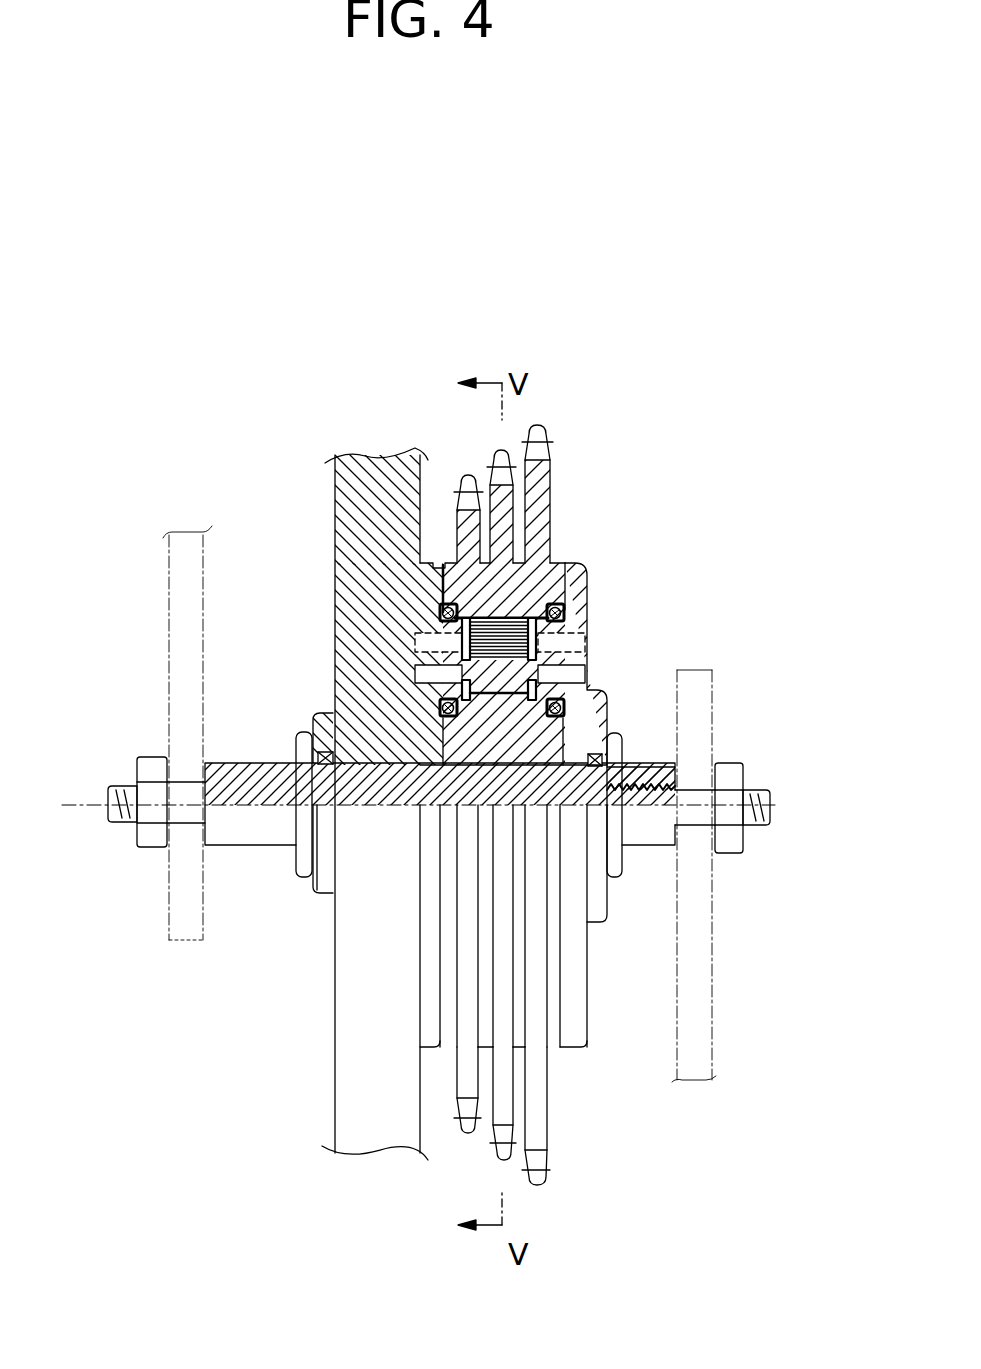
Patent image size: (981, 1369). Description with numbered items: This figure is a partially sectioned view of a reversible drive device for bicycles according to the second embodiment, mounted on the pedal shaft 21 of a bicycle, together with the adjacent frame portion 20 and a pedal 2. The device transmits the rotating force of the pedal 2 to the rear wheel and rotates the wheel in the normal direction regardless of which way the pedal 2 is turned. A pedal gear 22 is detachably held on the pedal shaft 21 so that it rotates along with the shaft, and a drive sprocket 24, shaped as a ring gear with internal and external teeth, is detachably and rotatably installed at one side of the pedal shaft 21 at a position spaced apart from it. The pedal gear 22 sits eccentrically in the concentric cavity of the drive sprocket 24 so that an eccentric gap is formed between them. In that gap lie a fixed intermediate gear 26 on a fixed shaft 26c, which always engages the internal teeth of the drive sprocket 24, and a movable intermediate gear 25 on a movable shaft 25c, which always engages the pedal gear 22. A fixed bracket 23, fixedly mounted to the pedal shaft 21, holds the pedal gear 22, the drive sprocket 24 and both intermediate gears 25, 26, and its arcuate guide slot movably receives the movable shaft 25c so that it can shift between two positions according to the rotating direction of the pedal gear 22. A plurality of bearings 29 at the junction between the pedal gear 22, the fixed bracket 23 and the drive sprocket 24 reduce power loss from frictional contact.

The pedal 2 is at (168, 632).
The frame 20 is at (333, 490).
The pedal shaft 21 is at (250, 790).
The pedal gear 22 is at (335, 620).
The fixed bracket 23 is at (565, 580).
The drive sprocket 24 is at (457, 493).
The movable intermediate gear 25 is at (590, 695).
The movable shaft 25c is at (585, 672).
The fixed intermediate gear 26 is at (587, 590).
The fixed shaft 26c is at (585, 645).
The bearings 29 is at (335, 535).